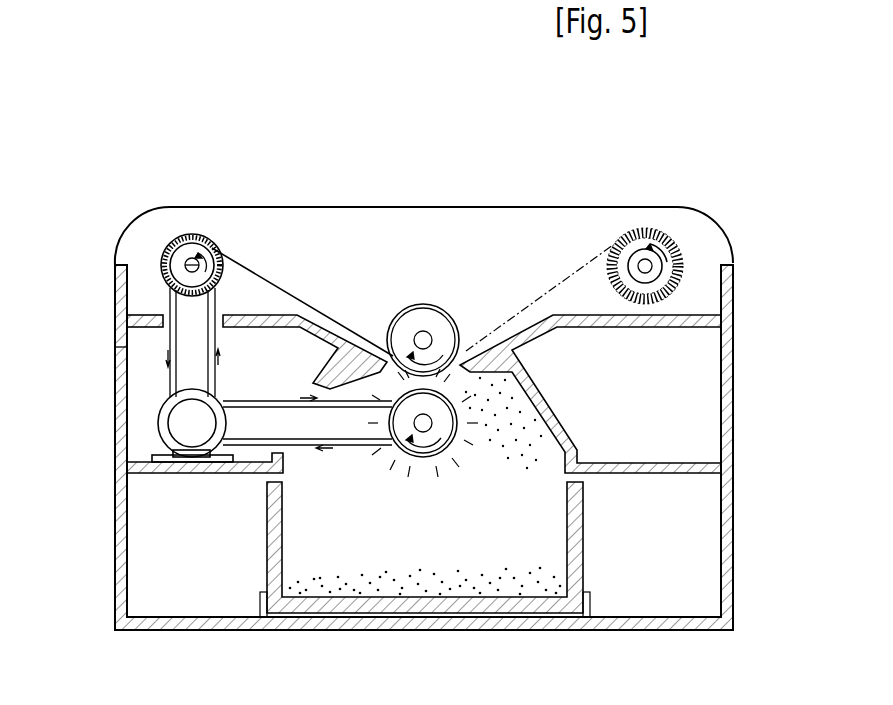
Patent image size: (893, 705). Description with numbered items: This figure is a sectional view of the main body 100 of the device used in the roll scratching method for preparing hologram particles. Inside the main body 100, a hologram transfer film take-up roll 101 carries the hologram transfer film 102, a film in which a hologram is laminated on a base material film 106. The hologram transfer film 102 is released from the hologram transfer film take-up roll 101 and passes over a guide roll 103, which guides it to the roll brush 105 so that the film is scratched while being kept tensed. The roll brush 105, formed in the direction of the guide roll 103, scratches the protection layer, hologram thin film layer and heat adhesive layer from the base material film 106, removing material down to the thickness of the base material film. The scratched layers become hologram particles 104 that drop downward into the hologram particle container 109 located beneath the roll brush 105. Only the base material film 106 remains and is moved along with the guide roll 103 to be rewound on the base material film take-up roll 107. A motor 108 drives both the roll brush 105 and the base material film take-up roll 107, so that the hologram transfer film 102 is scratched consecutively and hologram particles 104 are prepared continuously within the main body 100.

The main body 100 is at (601, 163).
The hologram transfer film take-up roll 101 is at (645, 266).
The hologram transfer film 102 is at (531, 303).
The guide roll 103 is at (423, 331).
The hologram particles 104 is at (517, 413).
The roll brush 105 is at (448, 457).
The base material film 106 is at (263, 275).
The base material film take-up roll 107 is at (163, 264).
The motor 108 is at (186, 427).
The hologram particle container 109 is at (572, 550).